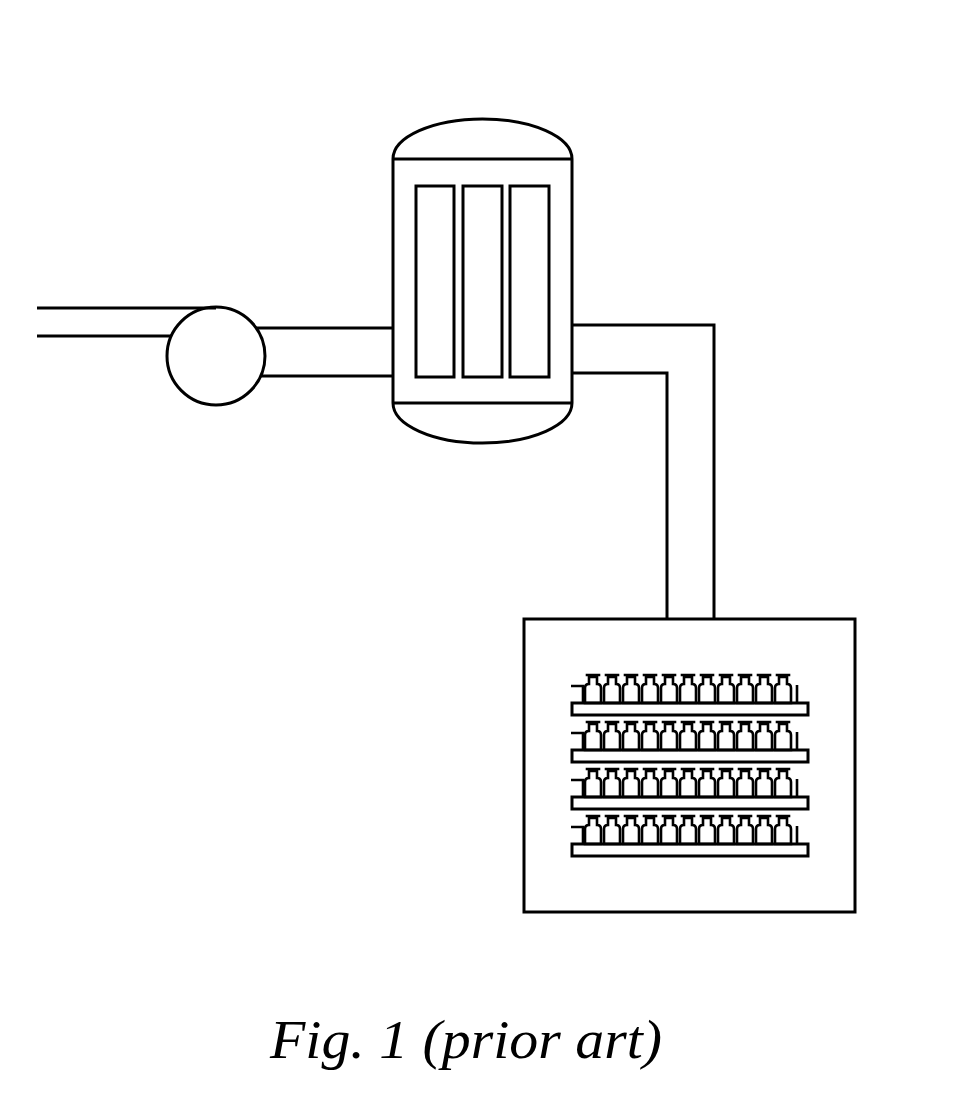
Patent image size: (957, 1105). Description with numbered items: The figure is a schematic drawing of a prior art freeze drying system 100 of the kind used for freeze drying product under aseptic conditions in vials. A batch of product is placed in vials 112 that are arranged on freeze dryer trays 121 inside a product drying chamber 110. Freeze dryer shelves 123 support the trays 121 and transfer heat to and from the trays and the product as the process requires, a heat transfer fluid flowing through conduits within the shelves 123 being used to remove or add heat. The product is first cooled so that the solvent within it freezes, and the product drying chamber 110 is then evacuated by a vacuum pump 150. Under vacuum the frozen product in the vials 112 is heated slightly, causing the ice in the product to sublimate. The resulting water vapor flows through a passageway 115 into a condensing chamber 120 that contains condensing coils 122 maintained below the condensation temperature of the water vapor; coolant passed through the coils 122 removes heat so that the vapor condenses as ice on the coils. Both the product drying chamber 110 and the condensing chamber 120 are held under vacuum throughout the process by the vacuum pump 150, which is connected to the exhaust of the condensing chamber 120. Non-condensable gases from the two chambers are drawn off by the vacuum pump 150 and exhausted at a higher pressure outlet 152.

The freeze drying system 100 is at (437, 48).
The product drying chamber 110 is at (522, 858).
The vials 112 is at (746, 672).
The passageway 115 is at (715, 474).
The condensing chamber 120 is at (573, 186).
The freeze dryer trays 121 is at (577, 688).
The condensing coils 122 is at (416, 224).
The freeze dryer shelves 123 is at (572, 710).
The vacuum pump 150 is at (215, 307).
The higher pressure outlet 152 is at (123, 316).